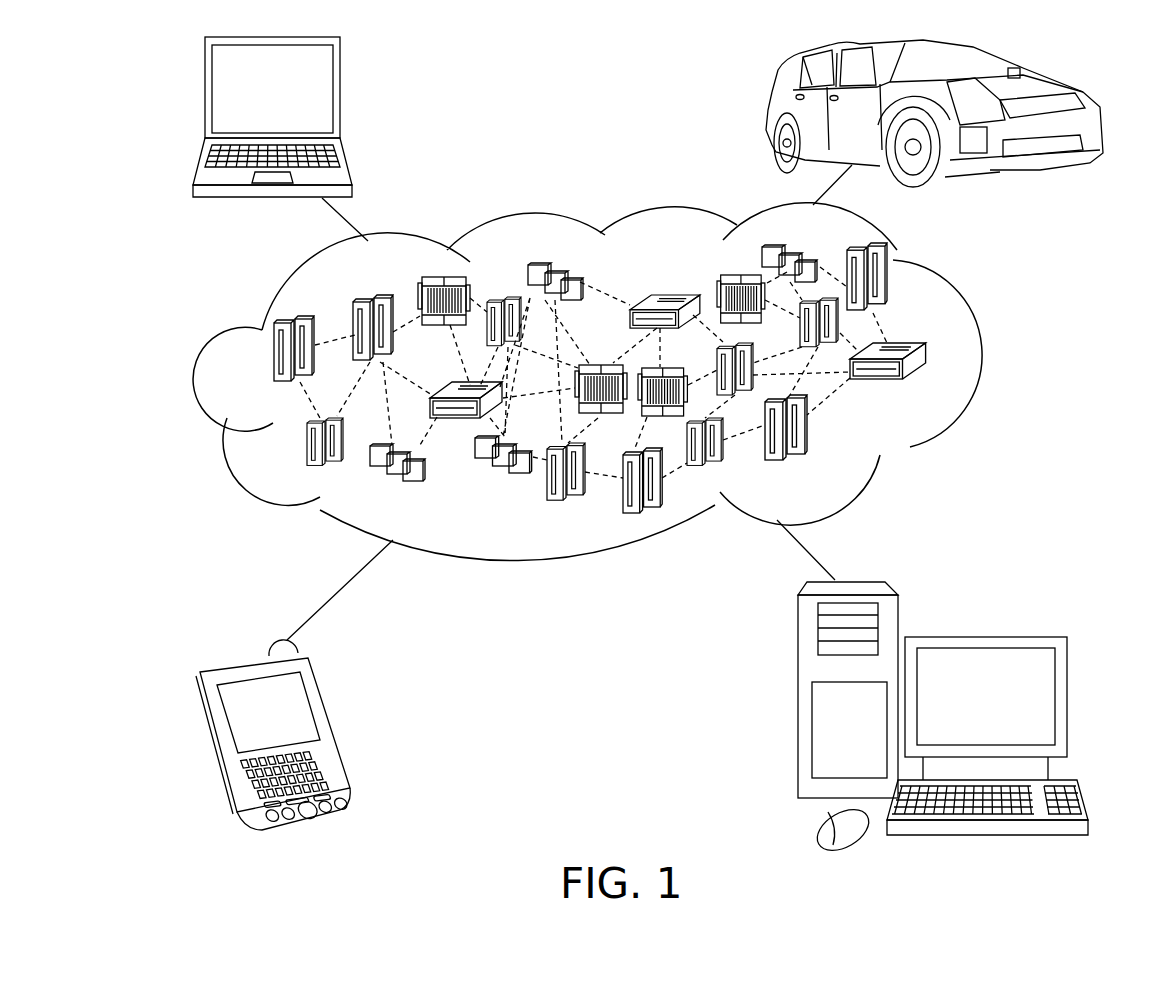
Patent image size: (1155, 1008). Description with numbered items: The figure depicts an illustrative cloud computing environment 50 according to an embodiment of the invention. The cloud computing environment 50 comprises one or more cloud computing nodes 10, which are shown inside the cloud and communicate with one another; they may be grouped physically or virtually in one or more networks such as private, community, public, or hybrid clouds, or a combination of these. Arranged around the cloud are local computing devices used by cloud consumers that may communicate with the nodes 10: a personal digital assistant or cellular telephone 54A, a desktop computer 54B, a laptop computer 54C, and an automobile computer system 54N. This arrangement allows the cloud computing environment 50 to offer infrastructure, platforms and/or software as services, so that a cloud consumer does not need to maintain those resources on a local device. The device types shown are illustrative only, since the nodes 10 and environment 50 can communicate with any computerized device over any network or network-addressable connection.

The cloud computing nodes 10 is at (934, 390).
The cloud computing environment 50 is at (983, 360).
The personal digital assistant (PDA) or cellular telephone 54A is at (323, 727).
The desktop computer 54B is at (983, 640).
The laptop computer 54C is at (340, 98).
The automobile computer system 54N is at (770, 112).